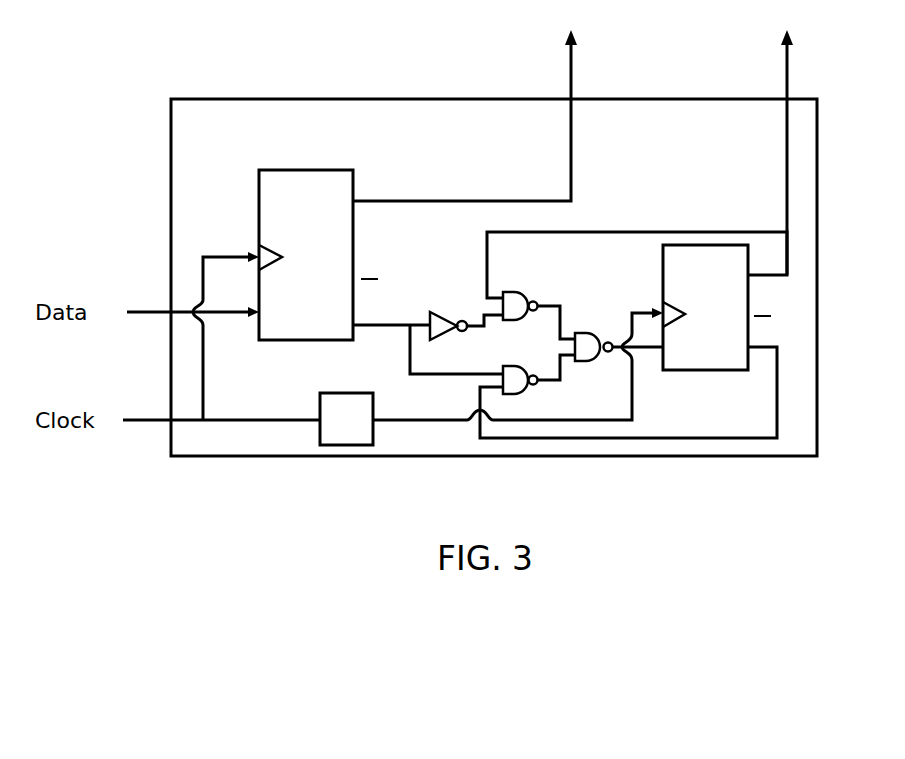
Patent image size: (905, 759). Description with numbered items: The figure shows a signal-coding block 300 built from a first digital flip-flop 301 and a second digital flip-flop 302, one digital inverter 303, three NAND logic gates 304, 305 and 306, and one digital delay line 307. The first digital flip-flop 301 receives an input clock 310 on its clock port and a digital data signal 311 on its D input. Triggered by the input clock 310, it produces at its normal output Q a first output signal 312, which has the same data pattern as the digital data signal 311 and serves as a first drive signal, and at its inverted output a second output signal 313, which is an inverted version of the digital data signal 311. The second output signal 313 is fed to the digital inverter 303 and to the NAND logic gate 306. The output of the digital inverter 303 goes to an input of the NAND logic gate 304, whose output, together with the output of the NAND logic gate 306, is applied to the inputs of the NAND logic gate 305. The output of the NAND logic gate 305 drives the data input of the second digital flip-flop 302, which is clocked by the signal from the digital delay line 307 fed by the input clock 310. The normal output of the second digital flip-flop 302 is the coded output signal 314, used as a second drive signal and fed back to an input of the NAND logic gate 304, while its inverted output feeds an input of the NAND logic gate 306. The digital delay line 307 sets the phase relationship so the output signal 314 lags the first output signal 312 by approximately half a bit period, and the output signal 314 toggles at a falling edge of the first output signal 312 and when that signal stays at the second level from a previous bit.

The signal-coding block 300 is at (240, 138).
The first digital flip-flop 301 is at (348, 324).
The second digital flip-flop 302 is at (745, 346).
The digital inverter 303 is at (432, 312).
The NAND logic gate 304 is at (520, 292).
The NAND logic gate 305 is at (587, 337).
The NAND logic gate 306 is at (523, 393).
The digital delay line 307 is at (355, 447).
The input clock 310 is at (145, 425).
The digital data signal 311 is at (147, 308).
The first output signal 312 is at (571, 123).
The second output signal 313 is at (378, 330).
The output signal 314 is at (782, 122).